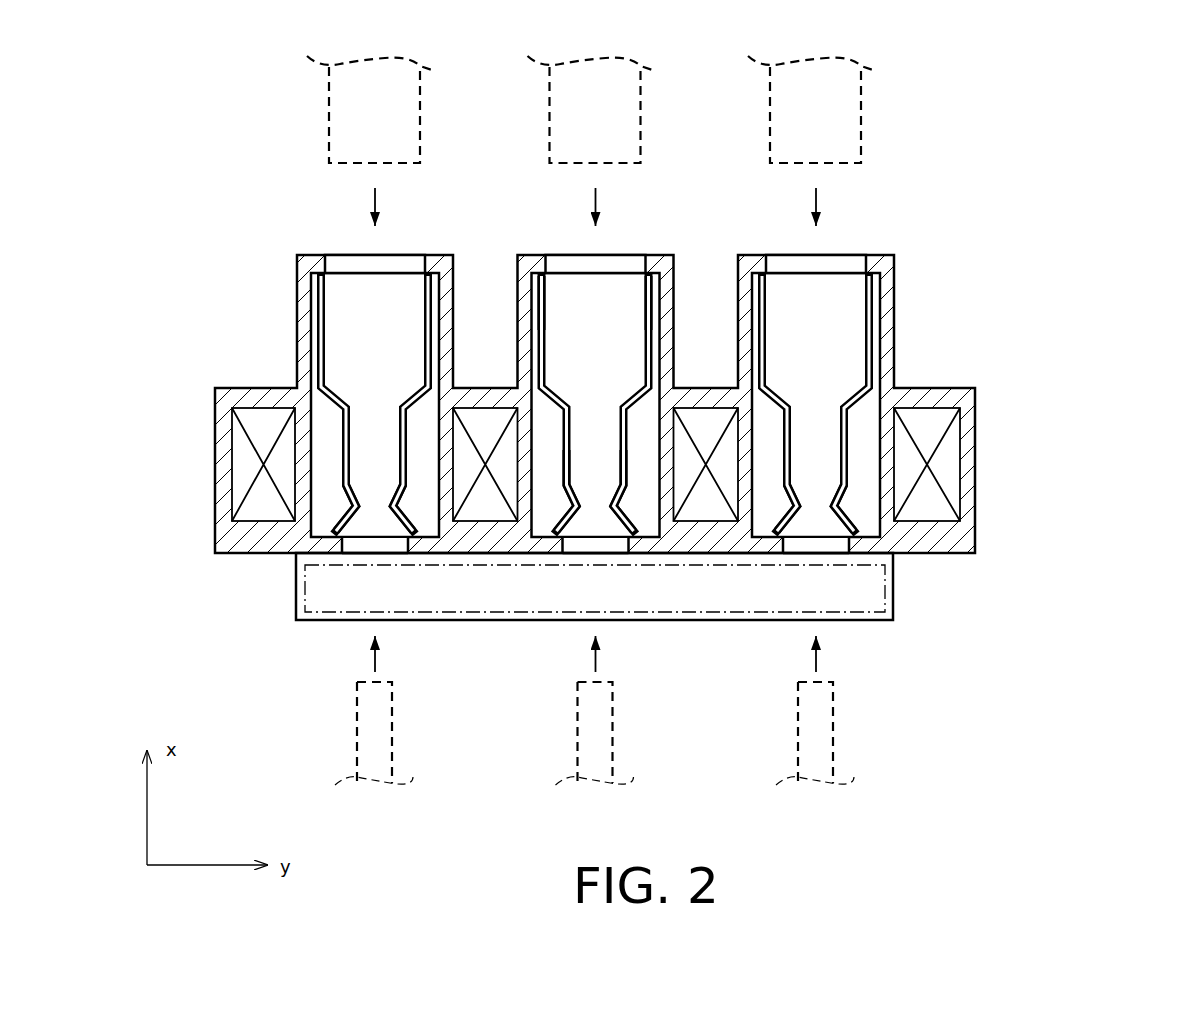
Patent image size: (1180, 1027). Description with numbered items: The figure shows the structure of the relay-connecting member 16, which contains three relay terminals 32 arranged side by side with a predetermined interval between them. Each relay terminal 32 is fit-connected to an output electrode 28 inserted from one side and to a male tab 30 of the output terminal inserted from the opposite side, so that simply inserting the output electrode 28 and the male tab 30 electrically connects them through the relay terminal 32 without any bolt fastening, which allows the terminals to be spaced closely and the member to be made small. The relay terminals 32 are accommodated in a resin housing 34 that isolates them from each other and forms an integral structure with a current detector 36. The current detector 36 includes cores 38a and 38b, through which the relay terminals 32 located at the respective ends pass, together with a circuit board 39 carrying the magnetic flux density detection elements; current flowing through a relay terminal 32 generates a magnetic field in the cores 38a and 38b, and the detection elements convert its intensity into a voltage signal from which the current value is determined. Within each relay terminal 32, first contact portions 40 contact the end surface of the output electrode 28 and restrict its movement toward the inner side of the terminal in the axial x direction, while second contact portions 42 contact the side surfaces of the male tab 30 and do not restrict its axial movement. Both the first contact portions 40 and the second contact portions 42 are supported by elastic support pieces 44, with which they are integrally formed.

The relay-connecting member 16 is at (692, 486).
The output electrode 28 is at (420, 113).
The male tab 30 is at (392, 732).
The relay terminal 32 is at (412, 422).
The housing 34 is at (896, 292).
The current detector 36 is at (924, 588).
The core 38a is at (945, 468).
The core 38b is at (263, 512).
The circuit board 39 is at (843, 613).
The first contact portion 40 is at (338, 392).
The second contact portion 42 is at (357, 495).
The elastic support piece 44 is at (327, 323).